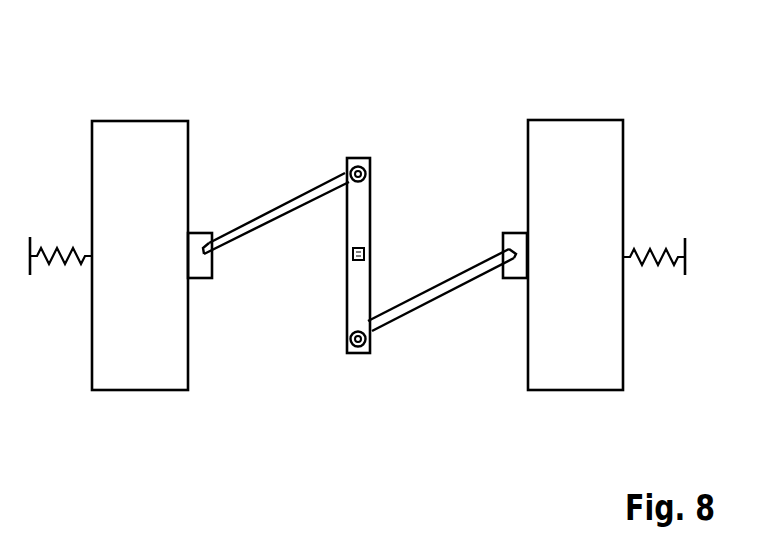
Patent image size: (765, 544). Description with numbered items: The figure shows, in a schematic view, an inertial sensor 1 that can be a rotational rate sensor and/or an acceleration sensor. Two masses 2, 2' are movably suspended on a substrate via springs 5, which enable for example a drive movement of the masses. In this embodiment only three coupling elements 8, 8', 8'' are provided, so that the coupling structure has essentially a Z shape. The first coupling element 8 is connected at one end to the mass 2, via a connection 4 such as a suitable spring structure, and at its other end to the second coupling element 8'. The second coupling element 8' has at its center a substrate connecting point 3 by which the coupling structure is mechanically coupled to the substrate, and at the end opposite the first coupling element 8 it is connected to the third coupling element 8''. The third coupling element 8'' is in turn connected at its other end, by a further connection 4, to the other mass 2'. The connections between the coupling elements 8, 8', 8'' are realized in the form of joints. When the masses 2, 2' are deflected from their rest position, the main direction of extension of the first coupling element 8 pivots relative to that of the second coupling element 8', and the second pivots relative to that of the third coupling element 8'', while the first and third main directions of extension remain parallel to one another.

The inertial sensor 1 is at (505, 95).
The mass 2 is at (140, 230).
The other mass 2' is at (575, 230).
The substrate connecting point 3 is at (352, 254).
The connection 4 is at (201, 232).
The spring 5 is at (54, 250).
The first coupling element 8 is at (276, 202).
The second coupling element 8' is at (380, 255).
The third coupling element 8'' is at (442, 303).